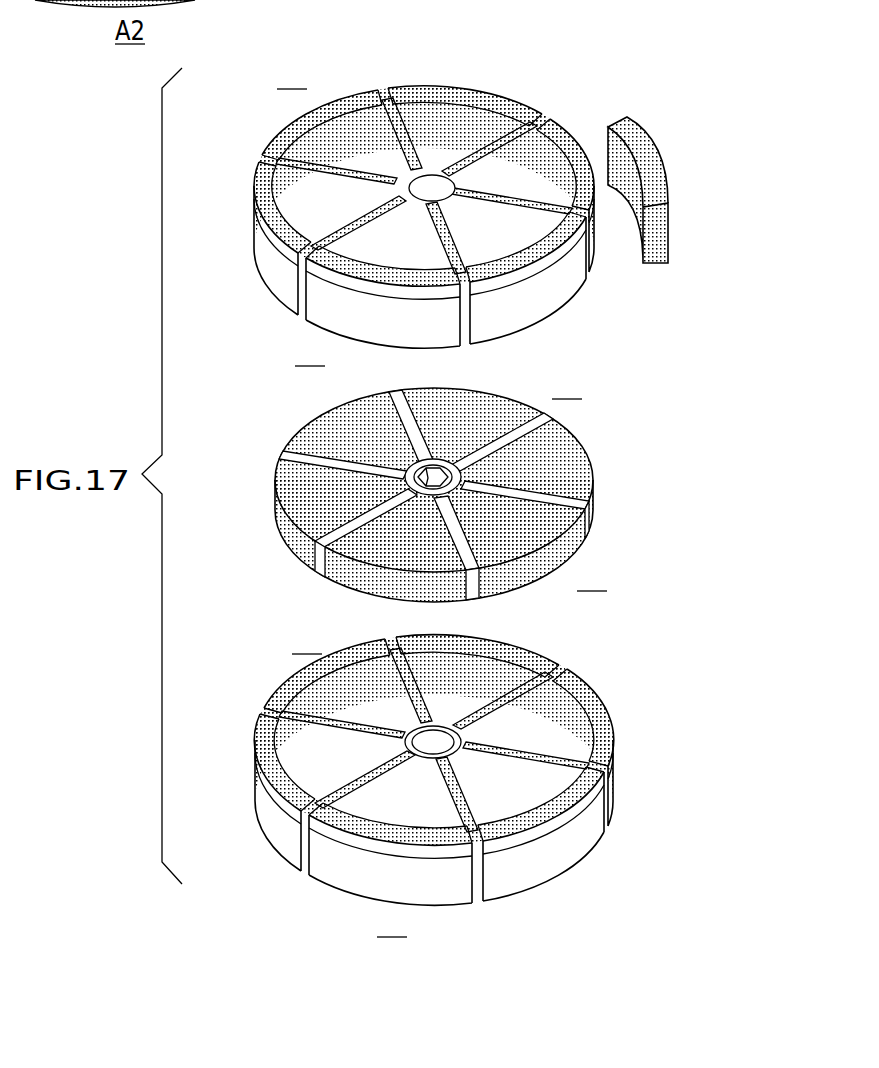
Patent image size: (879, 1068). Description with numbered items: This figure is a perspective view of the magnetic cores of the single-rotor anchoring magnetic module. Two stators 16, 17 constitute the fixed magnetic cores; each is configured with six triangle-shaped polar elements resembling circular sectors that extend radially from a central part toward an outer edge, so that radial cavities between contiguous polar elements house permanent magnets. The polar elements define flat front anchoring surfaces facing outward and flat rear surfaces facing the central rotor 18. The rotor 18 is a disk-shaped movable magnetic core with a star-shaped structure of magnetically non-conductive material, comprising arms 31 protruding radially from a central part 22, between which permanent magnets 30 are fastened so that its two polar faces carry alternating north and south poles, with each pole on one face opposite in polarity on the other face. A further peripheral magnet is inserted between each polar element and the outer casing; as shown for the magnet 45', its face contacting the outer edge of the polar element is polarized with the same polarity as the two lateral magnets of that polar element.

The stator 16 is at (219, 219).
The stator 17 is at (224, 779).
The central rotor 18 is at (219, 514).
The hub with hexagonal socket 22 is at (432, 478).
The permanent magnet 30 is at (300, 508).
The arm 31 is at (574, 490).
The peripheral magnet 45' is at (649, 229).